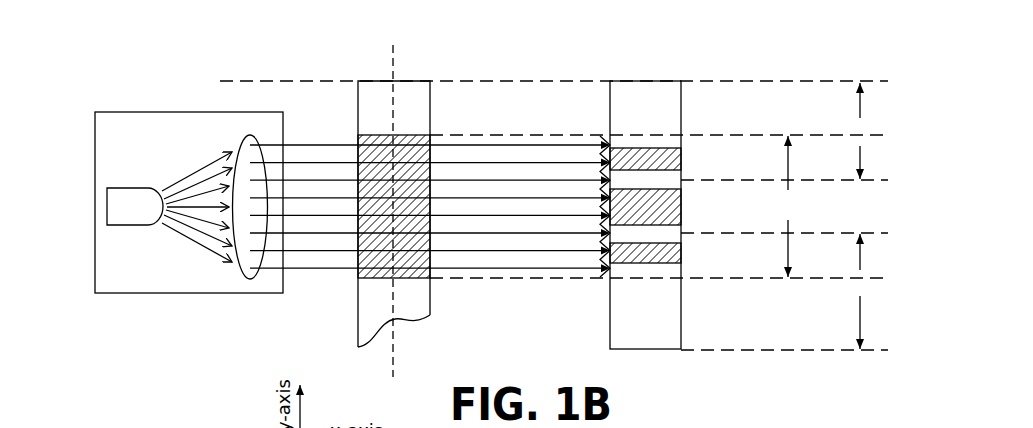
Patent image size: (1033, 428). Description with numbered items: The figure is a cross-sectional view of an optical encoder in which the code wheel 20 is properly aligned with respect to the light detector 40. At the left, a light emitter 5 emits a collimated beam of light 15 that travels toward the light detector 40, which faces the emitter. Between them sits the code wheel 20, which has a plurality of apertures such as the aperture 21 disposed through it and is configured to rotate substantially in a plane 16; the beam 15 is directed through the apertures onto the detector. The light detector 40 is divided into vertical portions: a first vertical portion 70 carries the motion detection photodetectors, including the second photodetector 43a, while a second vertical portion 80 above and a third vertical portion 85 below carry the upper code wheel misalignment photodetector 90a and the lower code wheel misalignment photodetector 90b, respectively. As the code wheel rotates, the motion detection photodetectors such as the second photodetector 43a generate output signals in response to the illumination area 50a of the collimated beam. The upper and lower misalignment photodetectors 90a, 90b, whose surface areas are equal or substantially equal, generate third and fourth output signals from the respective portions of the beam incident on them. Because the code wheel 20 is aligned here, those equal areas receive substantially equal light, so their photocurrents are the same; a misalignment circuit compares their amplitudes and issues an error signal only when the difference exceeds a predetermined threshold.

The light emitter 5 is at (128, 112).
The collimated beam of light 15 is at (312, 283).
The plane 16 is at (393, 340).
The code wheel 20 is at (371, 80).
The aperture 21 is at (407, 128).
The light detector 40 is at (646, 81).
The second photodetector 43a is at (681, 216).
The illumination area 50a is at (788, 206).
The first vertical portion 70 is at (859, 208).
The second vertical portion 80 is at (859, 131).
The third vertical portion 85 is at (859, 291).
The upper code wheel misalignment photodetector 90a is at (672, 157).
The lower code wheel misalignment photodetector 90b is at (676, 256).